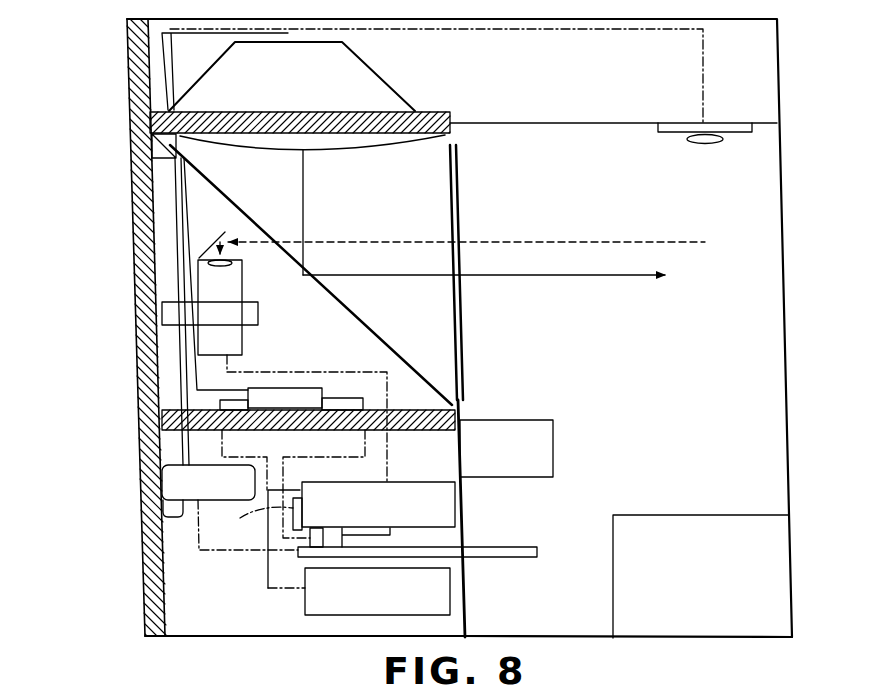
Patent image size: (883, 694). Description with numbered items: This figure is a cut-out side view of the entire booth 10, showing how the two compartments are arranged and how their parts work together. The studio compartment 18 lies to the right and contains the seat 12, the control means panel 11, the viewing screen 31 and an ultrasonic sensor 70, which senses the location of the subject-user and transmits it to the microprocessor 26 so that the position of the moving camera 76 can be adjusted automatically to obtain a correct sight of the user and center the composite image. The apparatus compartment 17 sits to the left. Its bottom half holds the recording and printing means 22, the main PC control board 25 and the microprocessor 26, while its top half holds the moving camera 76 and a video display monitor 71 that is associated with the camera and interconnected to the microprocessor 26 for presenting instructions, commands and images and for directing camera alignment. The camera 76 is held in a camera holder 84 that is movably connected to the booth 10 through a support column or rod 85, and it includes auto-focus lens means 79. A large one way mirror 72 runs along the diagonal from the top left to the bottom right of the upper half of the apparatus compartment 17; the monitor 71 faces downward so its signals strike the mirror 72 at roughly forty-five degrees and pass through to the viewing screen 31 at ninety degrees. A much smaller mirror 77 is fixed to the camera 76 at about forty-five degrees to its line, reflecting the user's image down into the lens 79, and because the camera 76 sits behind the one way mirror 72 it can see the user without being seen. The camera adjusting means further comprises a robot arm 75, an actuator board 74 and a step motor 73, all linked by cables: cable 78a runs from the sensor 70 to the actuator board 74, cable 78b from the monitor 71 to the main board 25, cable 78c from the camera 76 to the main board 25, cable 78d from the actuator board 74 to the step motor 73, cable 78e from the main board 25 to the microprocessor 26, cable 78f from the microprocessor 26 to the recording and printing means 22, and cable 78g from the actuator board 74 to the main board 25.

The booth 10 is at (794, 128).
The control means panel 11 is at (553, 432).
The seat 12 is at (693, 525).
The apparatus compartment 17 is at (278, 627).
The studio compartment 18 is at (549, 625).
The recording and printing means 22 is at (437, 578).
The main PC control board 25 is at (505, 548).
The microprocessor 26 is at (447, 497).
The viewing screen 31 is at (460, 208).
The ultrasonic sensor 70 is at (703, 144).
The video display monitor 71 is at (363, 80).
The one way mirror 72 is at (372, 332).
The step motor 73 is at (170, 480).
The actuator board 74 is at (323, 393).
The robot arm 75 is at (172, 230).
The moving camera 76 is at (212, 292).
The small mirror 77 is at (208, 252).
The cable 78a is at (575, 33).
The cable 78b is at (192, 33).
The cable 78c is at (292, 372).
The cable 78d is at (222, 432).
The cable 78e is at (254, 524).
The cable 78f is at (268, 560).
The cable 78g is at (365, 435).
The auto-focus lens means 79 is at (212, 261).
The camera holder 84 is at (170, 310).
The support column or rod 85 is at (185, 374).